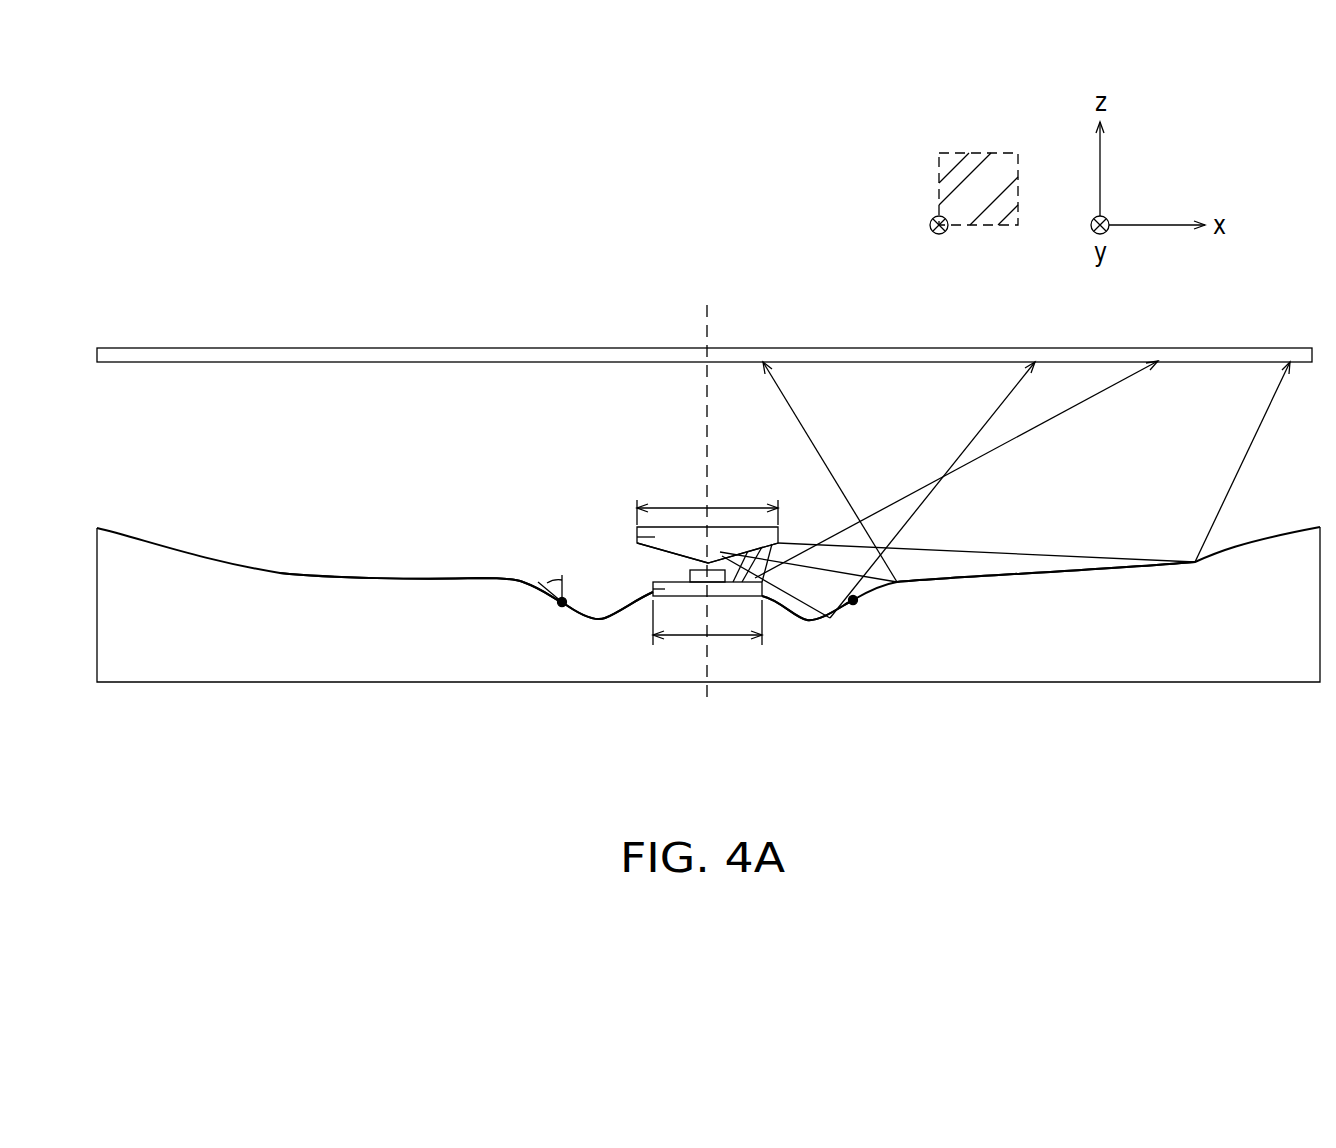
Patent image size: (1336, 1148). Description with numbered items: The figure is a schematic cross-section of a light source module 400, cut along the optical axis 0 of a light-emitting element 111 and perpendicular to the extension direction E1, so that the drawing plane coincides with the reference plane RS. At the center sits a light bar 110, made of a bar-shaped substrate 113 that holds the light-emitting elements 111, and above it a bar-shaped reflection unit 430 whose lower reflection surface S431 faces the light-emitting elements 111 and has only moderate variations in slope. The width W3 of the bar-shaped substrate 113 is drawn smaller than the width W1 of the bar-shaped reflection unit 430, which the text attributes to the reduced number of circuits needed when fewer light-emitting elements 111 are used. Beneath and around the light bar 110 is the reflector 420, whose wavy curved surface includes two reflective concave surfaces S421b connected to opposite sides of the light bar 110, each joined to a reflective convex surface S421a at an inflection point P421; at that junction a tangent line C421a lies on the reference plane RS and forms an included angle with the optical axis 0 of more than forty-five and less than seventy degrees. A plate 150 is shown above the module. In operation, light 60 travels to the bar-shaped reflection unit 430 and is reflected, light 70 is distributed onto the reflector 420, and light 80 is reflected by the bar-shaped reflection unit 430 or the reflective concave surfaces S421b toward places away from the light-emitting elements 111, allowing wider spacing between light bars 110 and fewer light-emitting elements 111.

The light guide plate / diffuser plate 150 is at (174, 357).
The optical axis 0 is at (707, 322).
The reflector 420 is at (1233, 553).
The reflective convex surface S421a is at (523, 582).
The reflective concave surface S421b is at (600, 618).
The inflection point P421 is at (560, 606).
The tangent line C421a is at (540, 587).
The light bar 110 is at (652, 677).
The light-emitting element 111 is at (652, 593).
The bar-shaped substrate 113 is at (662, 587).
The bar-shaped reflection unit 430 is at (655, 556).
The reflection surface S431 is at (662, 549).
The width of the bar-shaped reflection unit W1 is at (707, 500).
The width of the bar-shaped substrate W3 is at (707, 622).
The light 60 is at (808, 437).
The light 70 is at (1080, 405).
The light 80 is at (1008, 394).
The reference plane RS is at (984, 170).
The extension direction E1 is at (942, 242).
The light source module 400 is at (1320, 790).